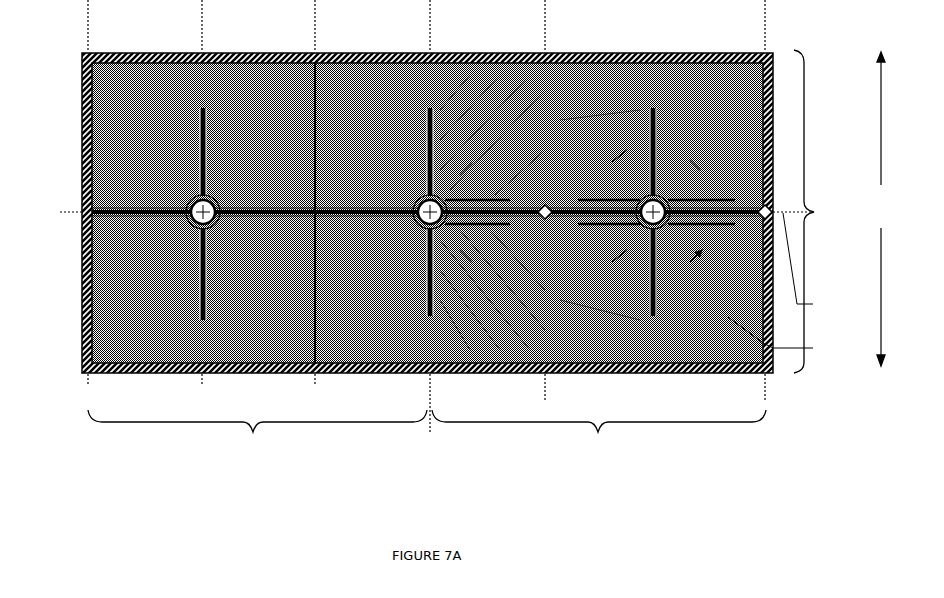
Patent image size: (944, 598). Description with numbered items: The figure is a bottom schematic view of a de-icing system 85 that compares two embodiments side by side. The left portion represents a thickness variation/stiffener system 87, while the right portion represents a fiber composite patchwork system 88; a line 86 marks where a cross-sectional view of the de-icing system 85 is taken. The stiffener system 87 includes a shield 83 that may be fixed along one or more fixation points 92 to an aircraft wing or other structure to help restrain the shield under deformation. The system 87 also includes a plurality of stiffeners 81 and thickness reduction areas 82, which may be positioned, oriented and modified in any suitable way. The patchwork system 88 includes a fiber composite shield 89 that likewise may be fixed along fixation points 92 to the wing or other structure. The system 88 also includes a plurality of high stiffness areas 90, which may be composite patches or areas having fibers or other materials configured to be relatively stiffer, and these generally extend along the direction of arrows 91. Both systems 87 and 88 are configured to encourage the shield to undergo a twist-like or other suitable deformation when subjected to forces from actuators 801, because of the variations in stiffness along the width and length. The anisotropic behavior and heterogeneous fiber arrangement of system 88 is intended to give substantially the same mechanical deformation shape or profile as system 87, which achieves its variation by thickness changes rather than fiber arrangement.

The stiffeners 81 is at (193, 128).
The actuators 801 is at (187, 190).
The thickness reduction areas 82 is at (308, 53).
The shield 83 is at (170, 270).
The de-icing system 85 is at (839, 211).
The line 86 is at (820, 263).
The thickness variation/stiffener system 87 is at (257, 435).
The fiber composite patchwork system 88 is at (599, 435).
The fiber composite shield 89 is at (792, 337).
The high stiffness areas 90 is at (442, 107).
The arrows 91 is at (627, 243).
The fixation points 92 is at (307, 197).